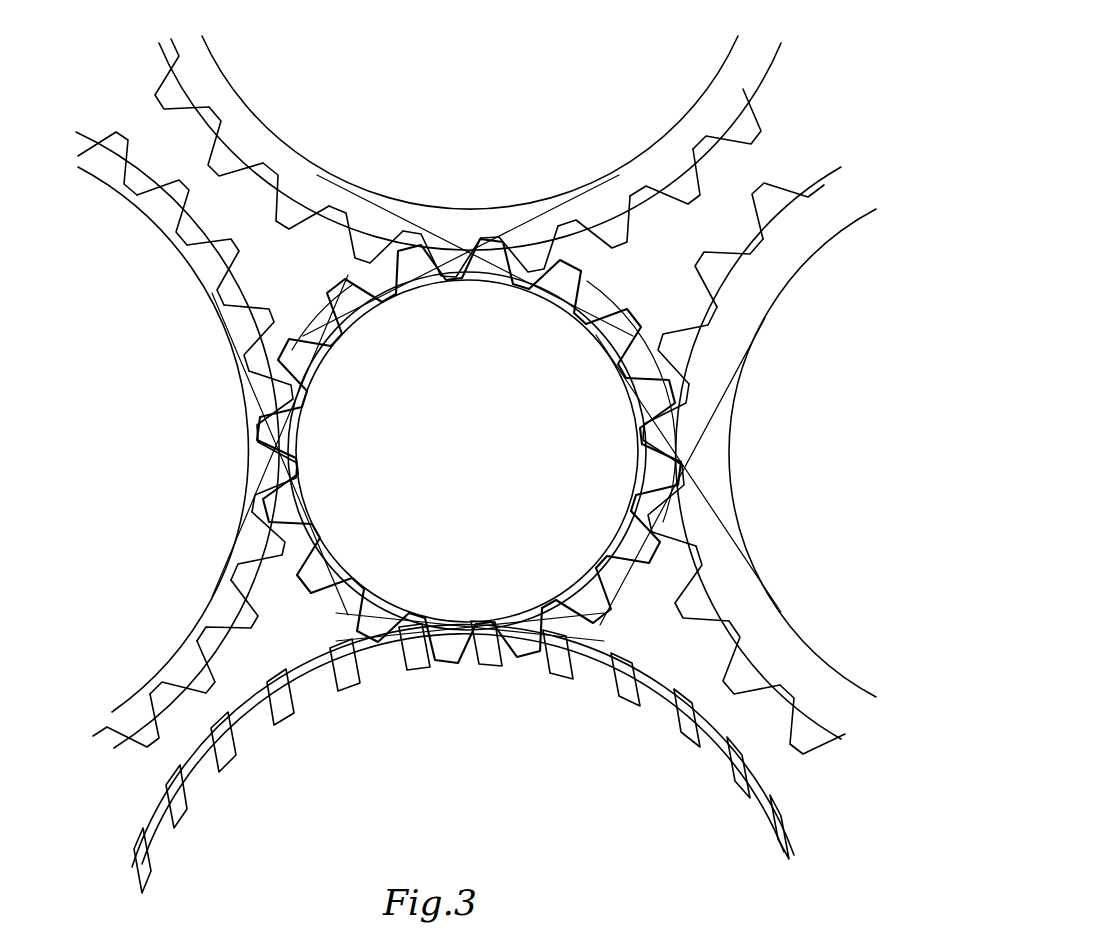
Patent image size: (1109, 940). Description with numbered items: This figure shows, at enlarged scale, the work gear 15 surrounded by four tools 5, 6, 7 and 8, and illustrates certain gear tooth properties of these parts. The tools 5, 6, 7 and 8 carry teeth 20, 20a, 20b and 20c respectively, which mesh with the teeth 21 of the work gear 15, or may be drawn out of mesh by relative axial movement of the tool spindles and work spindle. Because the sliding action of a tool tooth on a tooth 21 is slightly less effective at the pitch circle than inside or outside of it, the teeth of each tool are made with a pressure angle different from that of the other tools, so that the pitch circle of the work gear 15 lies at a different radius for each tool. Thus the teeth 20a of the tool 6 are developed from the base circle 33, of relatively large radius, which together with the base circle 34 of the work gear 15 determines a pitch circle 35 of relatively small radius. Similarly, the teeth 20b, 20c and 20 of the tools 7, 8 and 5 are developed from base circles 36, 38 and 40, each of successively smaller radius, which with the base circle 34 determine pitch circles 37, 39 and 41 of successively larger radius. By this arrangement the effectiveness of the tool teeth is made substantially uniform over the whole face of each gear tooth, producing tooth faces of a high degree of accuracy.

The work gear 15 is at (469, 451).
The tool 8 is at (479, 156).
The tool 5 is at (759, 436).
The tool 7 is at (186, 463).
The tool 6 is at (446, 757).
The base circle 38 is at (625, 165).
The base circle 40 is at (757, 343).
The tool teeth 20 is at (765, 189).
The tool teeth 20c is at (682, 192).
The tool teeth 20b is at (203, 678).
The tool teeth 20a is at (218, 723).
The base circle 33 is at (321, 676).
The base circle 36 is at (218, 589).
The pitch circle 39 is at (571, 318).
The pitch circle 41 is at (621, 371).
The pitch circle 37 is at (310, 366).
The pitch circle 35 is at (343, 583).
The base circle 34 is at (383, 597).
The work gear teeth 21 is at (585, 598).